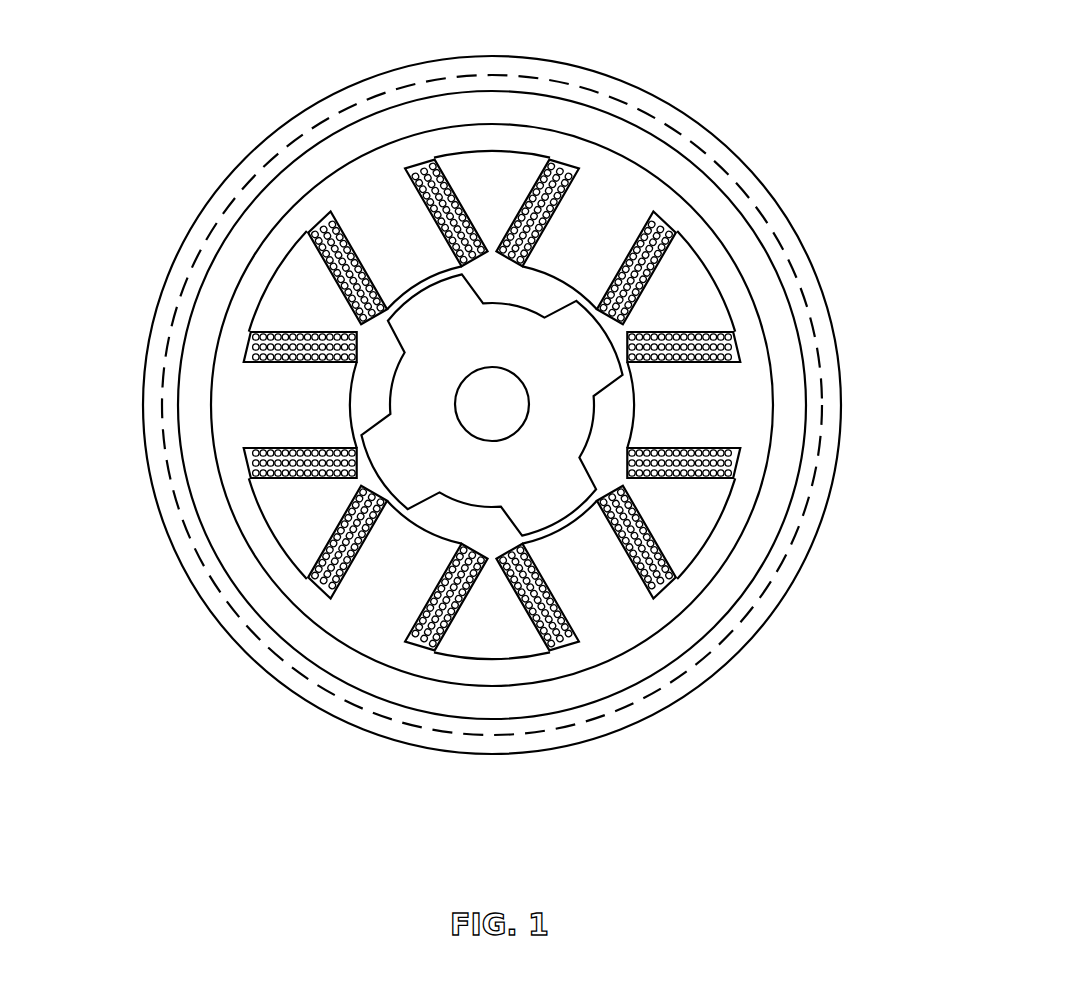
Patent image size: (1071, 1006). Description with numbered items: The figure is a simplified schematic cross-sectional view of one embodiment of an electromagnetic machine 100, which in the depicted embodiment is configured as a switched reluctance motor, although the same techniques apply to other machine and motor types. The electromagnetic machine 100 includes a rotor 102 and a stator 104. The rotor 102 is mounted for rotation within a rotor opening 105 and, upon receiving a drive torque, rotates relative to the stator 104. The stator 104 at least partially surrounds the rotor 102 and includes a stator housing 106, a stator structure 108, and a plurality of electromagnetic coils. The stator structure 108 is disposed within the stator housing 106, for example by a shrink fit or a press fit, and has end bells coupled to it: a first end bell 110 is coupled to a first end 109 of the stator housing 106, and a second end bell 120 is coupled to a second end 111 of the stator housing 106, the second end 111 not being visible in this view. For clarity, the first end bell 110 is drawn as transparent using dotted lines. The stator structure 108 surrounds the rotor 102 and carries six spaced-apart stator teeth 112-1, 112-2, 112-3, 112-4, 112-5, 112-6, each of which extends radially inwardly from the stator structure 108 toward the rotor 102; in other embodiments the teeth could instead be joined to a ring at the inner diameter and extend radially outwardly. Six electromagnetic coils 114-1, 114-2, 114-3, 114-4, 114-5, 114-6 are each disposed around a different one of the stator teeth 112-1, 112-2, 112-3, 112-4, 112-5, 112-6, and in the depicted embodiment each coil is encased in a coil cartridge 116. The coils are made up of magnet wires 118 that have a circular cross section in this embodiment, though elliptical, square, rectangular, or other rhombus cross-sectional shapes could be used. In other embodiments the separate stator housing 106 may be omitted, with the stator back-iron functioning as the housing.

The electromagnetic machine 100 is at (158, 52).
The rotor 102 is at (393, 363).
The stator 104 is at (780, 278).
The rotor opening 105 is at (595, 420).
The stator housing 106 is at (715, 182).
The stator structure 108 is at (492, 137).
The first end 109 is at (632, 137).
The first end bell 110 is at (571, 82).
The second end 111 is at (262, 190).
The stator tooth 112-1 is at (396, 163).
The stator tooth 112-2 is at (707, 238).
The stator tooth 112-3 is at (732, 511).
The stator tooth 112-4 is at (571, 656).
The stator tooth 112-5 is at (284, 571).
The stator tooth 112-6 is at (195, 386).
The electromagnetic coil 114-1 is at (457, 187).
The electromagnetic coil 114-2 is at (653, 270).
The electromagnetic coil 114-3 is at (686, 480).
The electromagnetic coil 114-4 is at (530, 618).
The electromagnetic coil 114-5 is at (436, 584).
The electromagnetic coil 114-6 is at (329, 417).
The coil cartridge 116 is at (280, 452).
The magnet wires 118 is at (245, 463).
The second end bell 120 is at (327, 93).